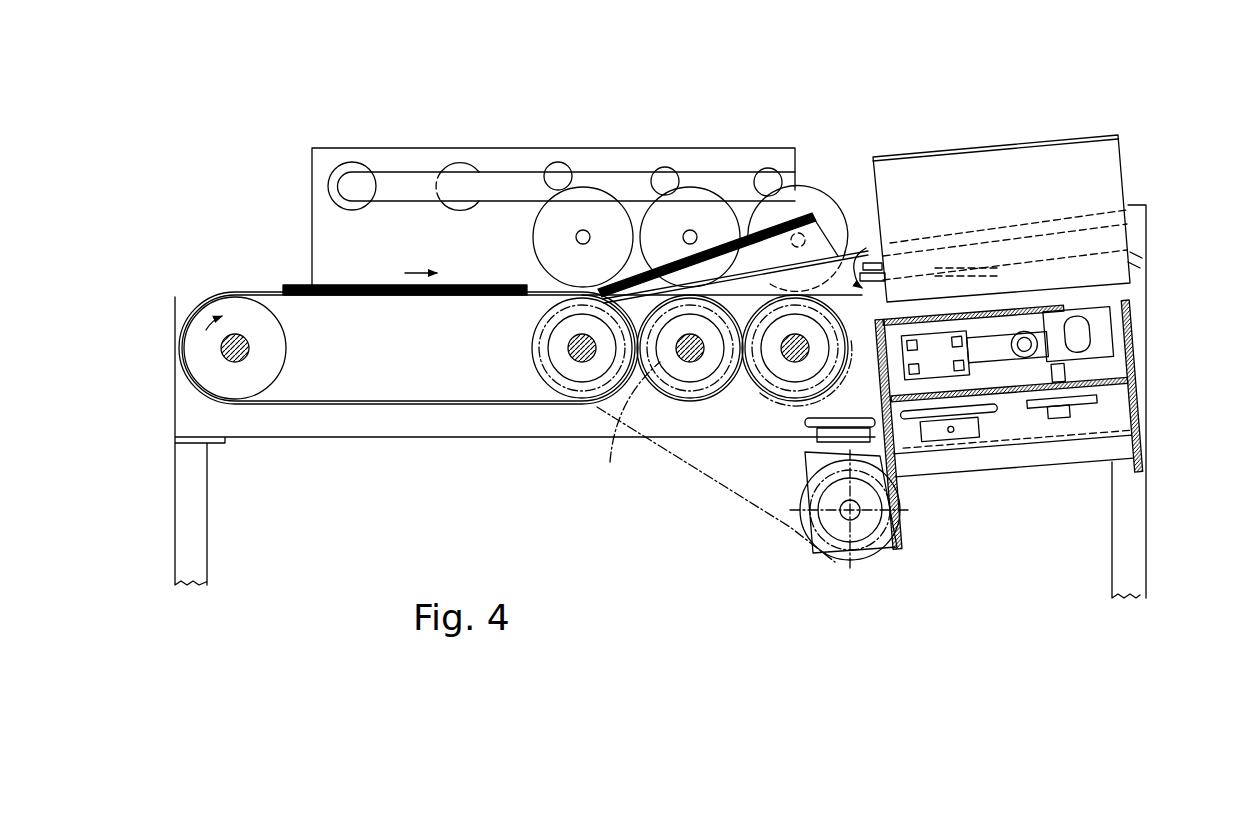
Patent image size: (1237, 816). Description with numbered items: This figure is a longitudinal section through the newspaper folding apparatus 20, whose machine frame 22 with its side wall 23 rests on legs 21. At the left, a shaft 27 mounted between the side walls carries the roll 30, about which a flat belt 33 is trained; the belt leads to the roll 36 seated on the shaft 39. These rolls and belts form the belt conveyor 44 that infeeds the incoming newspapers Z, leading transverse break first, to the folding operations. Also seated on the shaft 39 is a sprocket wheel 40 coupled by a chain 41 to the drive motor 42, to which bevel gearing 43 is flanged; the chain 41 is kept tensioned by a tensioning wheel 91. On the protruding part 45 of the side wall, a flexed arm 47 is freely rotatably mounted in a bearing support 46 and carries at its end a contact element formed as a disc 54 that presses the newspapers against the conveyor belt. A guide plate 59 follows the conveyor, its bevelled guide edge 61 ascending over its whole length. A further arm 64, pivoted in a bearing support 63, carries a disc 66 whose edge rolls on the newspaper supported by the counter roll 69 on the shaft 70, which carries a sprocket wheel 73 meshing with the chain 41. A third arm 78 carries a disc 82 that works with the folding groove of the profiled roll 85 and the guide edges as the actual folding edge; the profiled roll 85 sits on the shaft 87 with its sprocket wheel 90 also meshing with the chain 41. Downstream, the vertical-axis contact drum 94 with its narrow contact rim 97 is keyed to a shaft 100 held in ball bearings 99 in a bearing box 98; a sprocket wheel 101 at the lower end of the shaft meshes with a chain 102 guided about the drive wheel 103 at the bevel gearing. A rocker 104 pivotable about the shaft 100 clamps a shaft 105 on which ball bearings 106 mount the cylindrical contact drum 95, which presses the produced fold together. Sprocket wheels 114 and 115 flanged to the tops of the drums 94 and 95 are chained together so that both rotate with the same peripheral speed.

The apparatus 20 is at (878, 53).
The support members or legs 21 is at (200, 505).
The machine frame 22 is at (240, 292).
The side wall 23 is at (177, 297).
The shaft 27 is at (250, 346).
The roller or roll 30 is at (271, 364).
The flat belt 33 is at (345, 405).
The roller or roll 36 is at (535, 354).
The shaft 39 is at (570, 358).
The sprocket wheel 40 is at (568, 345).
The chain 41 is at (693, 455).
The drive motor 42 is at (848, 557).
The miter or bevel gearing 43 is at (818, 467).
The belt conveyor 44 is at (403, 300).
The part of the side wall 45 is at (312, 213).
The bearing support or bearing means 46 is at (352, 162).
The flexed arm 47 is at (424, 200).
The annular disc 54 is at (585, 200).
The guide plate or member 59 is at (866, 243).
The guide edge 61 is at (836, 226).
The bearing support 63 is at (463, 162).
The flexed or bent arm 64 is at (628, 150).
The disc or plate 66 is at (690, 200).
The counter roll or roller 69 is at (672, 387).
The shaft 70 is at (693, 362).
The sprocket wheel 73 is at (626, 429).
The arm or arm member 78 is at (745, 180).
The disc or plate 82 is at (790, 200).
The shaped or profiled roll 85 is at (782, 362).
The shaft 87 is at (795, 362).
The sprocket wheel 90 is at (838, 304).
The tensioning wheel 91 is at (760, 311).
The contact roll or drum 94 is at (877, 282).
The contact or press drum or roll 95 is at (1150, 280).
The contact rim 97 is at (883, 260).
The bearing box 98 is at (1135, 335).
The ball bearings 99 is at (950, 330).
The shaft 100 is at (985, 245).
The sprocket wheel 101 is at (1000, 375).
The chain 102 is at (1015, 430).
The drive wheel or gear 103 is at (812, 452).
The rocker or balance 104 is at (1020, 372).
The shaft 105 is at (1060, 265).
The ball bearings 106 is at (1140, 268).
The sprocket wheel 114 is at (955, 245).
The sprocket wheel 115 is at (1030, 245).
The newspapers Z is at (356, 283).